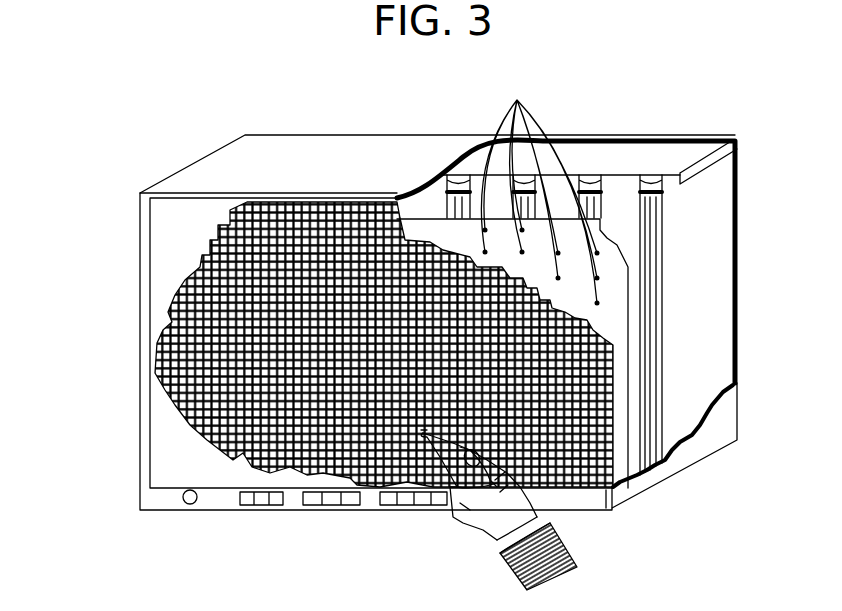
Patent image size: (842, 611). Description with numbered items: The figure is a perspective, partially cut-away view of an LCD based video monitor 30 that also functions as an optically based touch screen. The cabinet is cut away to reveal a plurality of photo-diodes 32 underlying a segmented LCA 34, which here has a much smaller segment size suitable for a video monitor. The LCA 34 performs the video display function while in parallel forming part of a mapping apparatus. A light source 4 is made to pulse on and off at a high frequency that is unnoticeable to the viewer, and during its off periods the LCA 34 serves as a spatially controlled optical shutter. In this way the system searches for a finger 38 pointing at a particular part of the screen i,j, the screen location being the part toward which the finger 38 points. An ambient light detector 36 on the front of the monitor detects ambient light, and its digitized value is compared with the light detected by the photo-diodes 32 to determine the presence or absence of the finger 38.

The LCD based video monitor 30 is at (104, 352).
The photo-diodes 32 is at (540, 189).
The light source 4 is at (651, 176).
The segmented LCA 34 is at (200, 266).
The ambient light detector 36 is at (184, 500).
The finger 38 is at (436, 434).
The particular part of the screen i,j is at (425, 432).